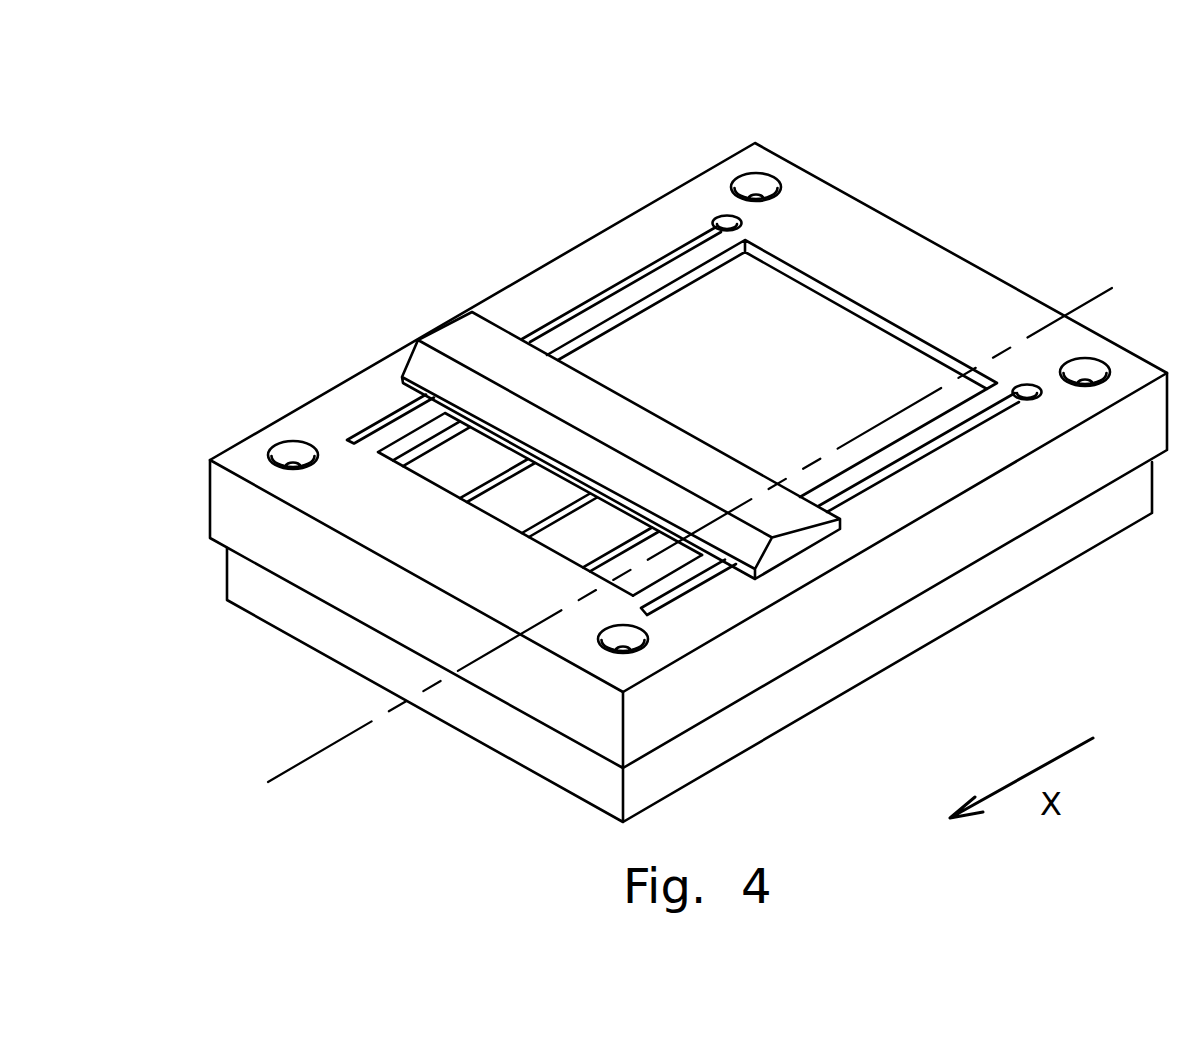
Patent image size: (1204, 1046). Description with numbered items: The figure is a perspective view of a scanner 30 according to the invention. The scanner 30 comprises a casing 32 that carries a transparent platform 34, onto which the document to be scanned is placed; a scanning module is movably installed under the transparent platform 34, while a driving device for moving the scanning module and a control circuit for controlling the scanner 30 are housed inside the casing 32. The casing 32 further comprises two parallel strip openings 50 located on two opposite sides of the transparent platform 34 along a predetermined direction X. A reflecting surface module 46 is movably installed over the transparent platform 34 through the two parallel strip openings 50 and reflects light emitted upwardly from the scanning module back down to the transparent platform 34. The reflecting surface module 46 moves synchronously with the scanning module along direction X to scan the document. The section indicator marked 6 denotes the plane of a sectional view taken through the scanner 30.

The scanner 30 is at (700, 426).
The casing 32 is at (897, 583).
The transparent platform 34 is at (662, 332).
The reflecting surface module 46 is at (463, 347).
The parallel strip openings 50 is at (714, 222).
The section line 6- 6 is at (1110, 266).